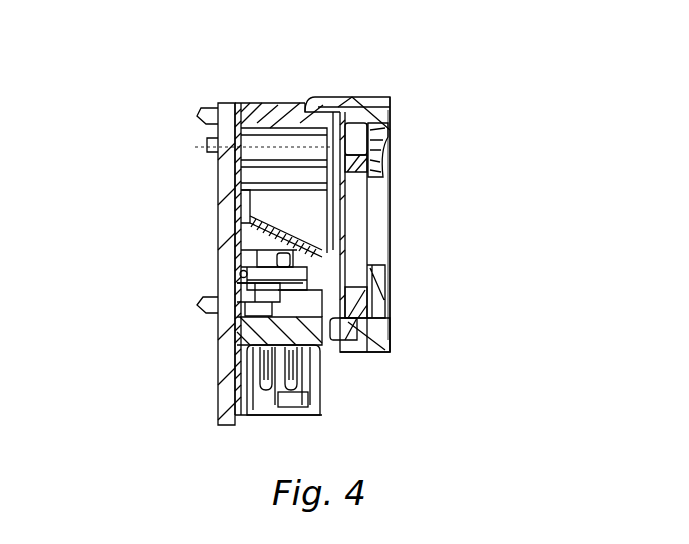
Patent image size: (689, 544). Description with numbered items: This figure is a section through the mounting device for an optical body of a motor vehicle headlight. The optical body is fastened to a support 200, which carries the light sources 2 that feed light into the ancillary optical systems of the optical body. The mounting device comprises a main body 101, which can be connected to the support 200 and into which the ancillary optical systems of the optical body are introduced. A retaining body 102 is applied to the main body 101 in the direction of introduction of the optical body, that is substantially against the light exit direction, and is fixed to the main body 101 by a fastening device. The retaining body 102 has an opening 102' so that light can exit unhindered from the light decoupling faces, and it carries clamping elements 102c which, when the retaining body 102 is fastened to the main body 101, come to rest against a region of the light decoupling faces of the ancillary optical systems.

The light sources 2 is at (212, 208).
The main body 101 is at (284, 114).
The retaining body 102 is at (402, 242).
The clamping elements 102c is at (381, 168).
The opening 102' is at (446, 224).
The support 200 is at (241, 272).